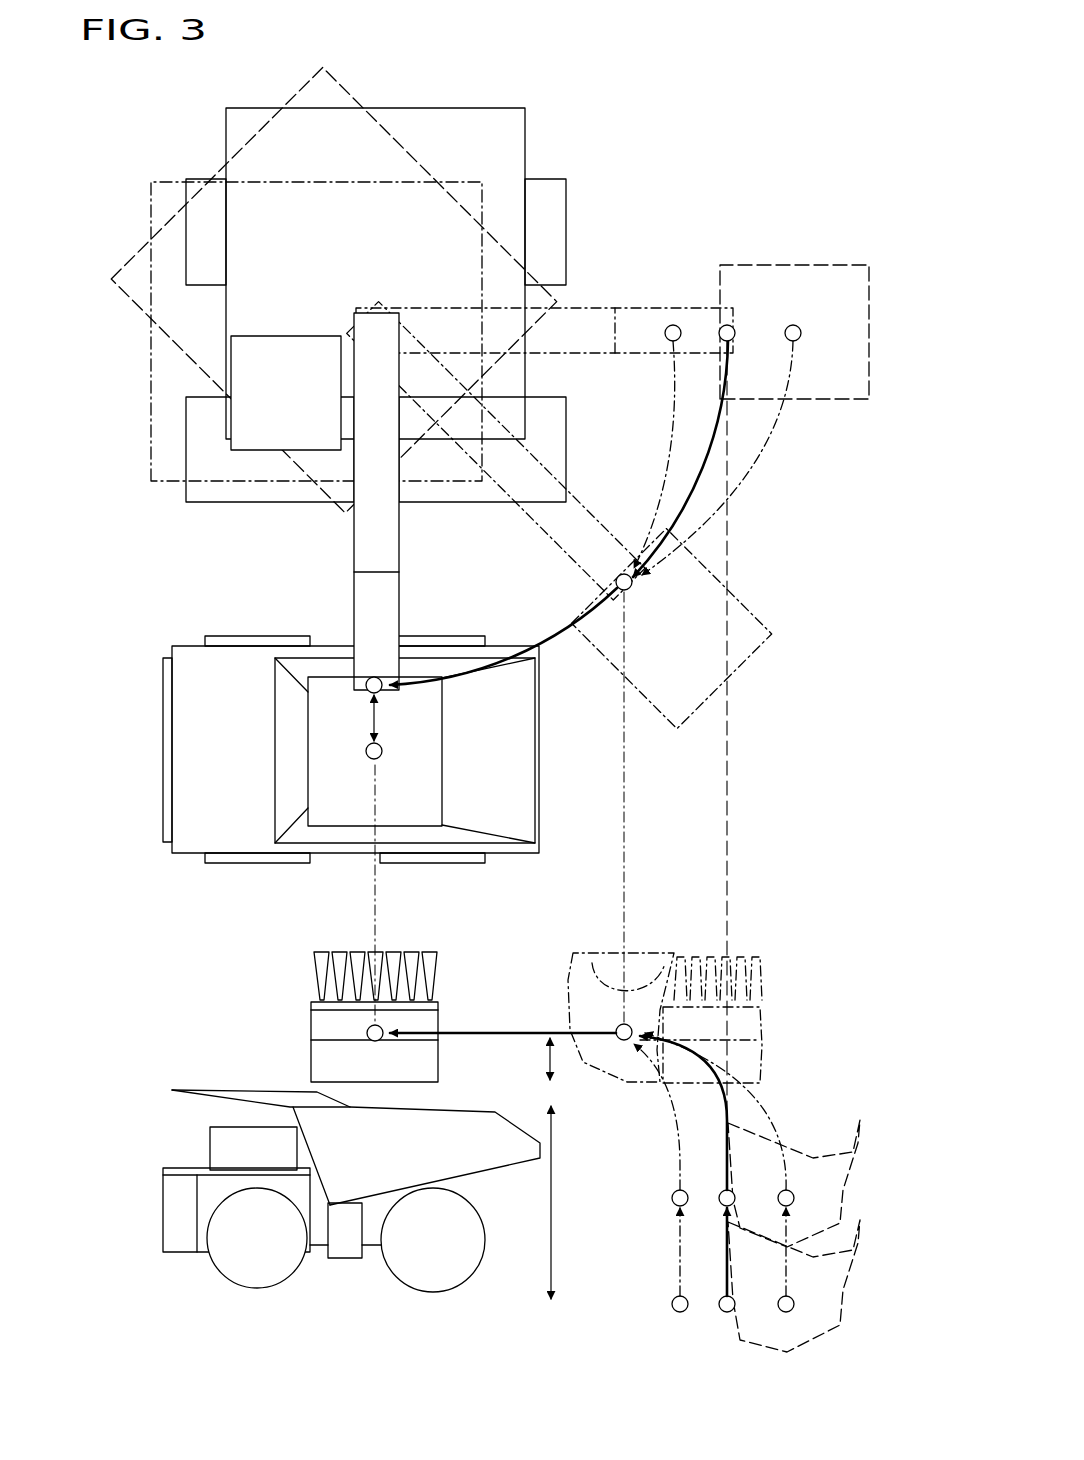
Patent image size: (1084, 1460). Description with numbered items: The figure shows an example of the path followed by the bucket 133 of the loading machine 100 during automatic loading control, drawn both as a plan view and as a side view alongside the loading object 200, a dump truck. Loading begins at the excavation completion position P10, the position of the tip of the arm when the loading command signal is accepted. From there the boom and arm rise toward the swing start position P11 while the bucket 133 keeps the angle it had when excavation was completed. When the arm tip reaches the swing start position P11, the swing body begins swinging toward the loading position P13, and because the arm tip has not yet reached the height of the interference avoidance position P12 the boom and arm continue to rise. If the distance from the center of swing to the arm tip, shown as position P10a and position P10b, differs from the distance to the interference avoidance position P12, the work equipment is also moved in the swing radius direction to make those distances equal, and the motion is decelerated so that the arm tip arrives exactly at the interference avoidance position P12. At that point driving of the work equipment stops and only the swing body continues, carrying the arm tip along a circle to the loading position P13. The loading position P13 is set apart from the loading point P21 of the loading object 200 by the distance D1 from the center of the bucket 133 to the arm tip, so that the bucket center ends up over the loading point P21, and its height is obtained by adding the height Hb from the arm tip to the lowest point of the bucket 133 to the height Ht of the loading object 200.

The loading machine 100 is at (135, 146).
The bucket 133 is at (818, 266).
The loading object 200 is at (163, 680).
The excavation completion position P10 is at (727, 325).
The swing start position P11 is at (735, 1192).
The position of the arm tip P10a is at (800, 337).
The position of the arm tip P10b is at (672, 325).
The interference avoidance position P12 is at (624, 573).
The loading position P13 is at (368, 677).
The loading point P21 is at (383, 758).
The distance from the center of the bucket to the tip of the arm D1 is at (353, 718).
The height from the tip of the arm to the lowest point of the bucket Hb is at (531, 1059).
The height of the loading object Ht is at (569, 1202).